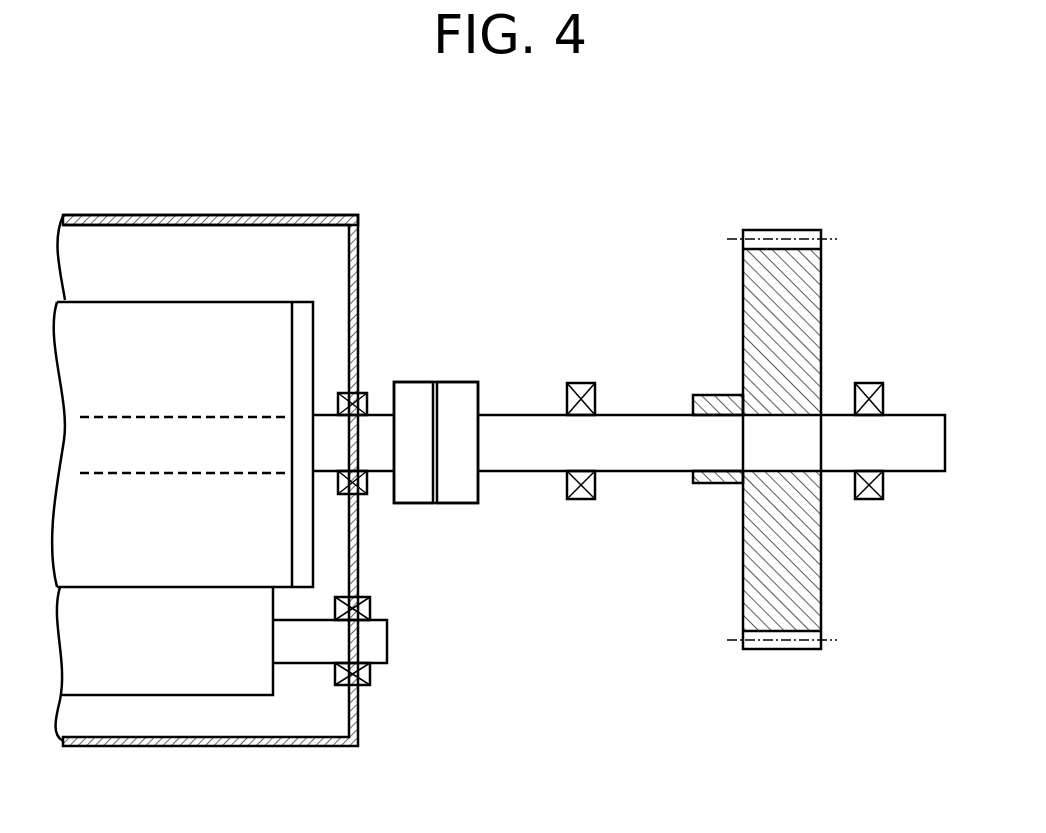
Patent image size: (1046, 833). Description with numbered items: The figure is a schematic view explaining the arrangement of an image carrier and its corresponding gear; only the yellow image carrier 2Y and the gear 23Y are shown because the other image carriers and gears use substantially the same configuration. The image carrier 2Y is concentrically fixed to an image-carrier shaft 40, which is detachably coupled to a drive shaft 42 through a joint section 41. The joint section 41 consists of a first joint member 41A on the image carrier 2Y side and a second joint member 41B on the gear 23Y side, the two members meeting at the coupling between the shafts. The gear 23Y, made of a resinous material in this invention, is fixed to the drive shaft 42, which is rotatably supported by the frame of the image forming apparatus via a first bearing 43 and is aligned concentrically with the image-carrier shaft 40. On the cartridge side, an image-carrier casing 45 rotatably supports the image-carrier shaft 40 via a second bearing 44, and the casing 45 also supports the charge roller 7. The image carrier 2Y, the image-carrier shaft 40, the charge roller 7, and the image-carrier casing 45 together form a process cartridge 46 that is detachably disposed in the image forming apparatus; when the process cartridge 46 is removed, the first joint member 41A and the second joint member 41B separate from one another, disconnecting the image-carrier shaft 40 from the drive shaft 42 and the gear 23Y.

The process cartridge 46 is at (213, 180).
The image-carrier casing 45 is at (314, 214).
The image carrier 2Y is at (228, 302).
The image-carrier shaft 40 is at (150, 475).
The charge roller 7 is at (180, 695).
The drive shaft 42 is at (643, 472).
The second bearing 44 is at (368, 404).
The joint section 41 is at (458, 518).
The first joint member 41A is at (413, 504).
The second joint member 41B is at (496, 357).
The first bearing 43 is at (600, 390).
The gear 23Y is at (783, 650).